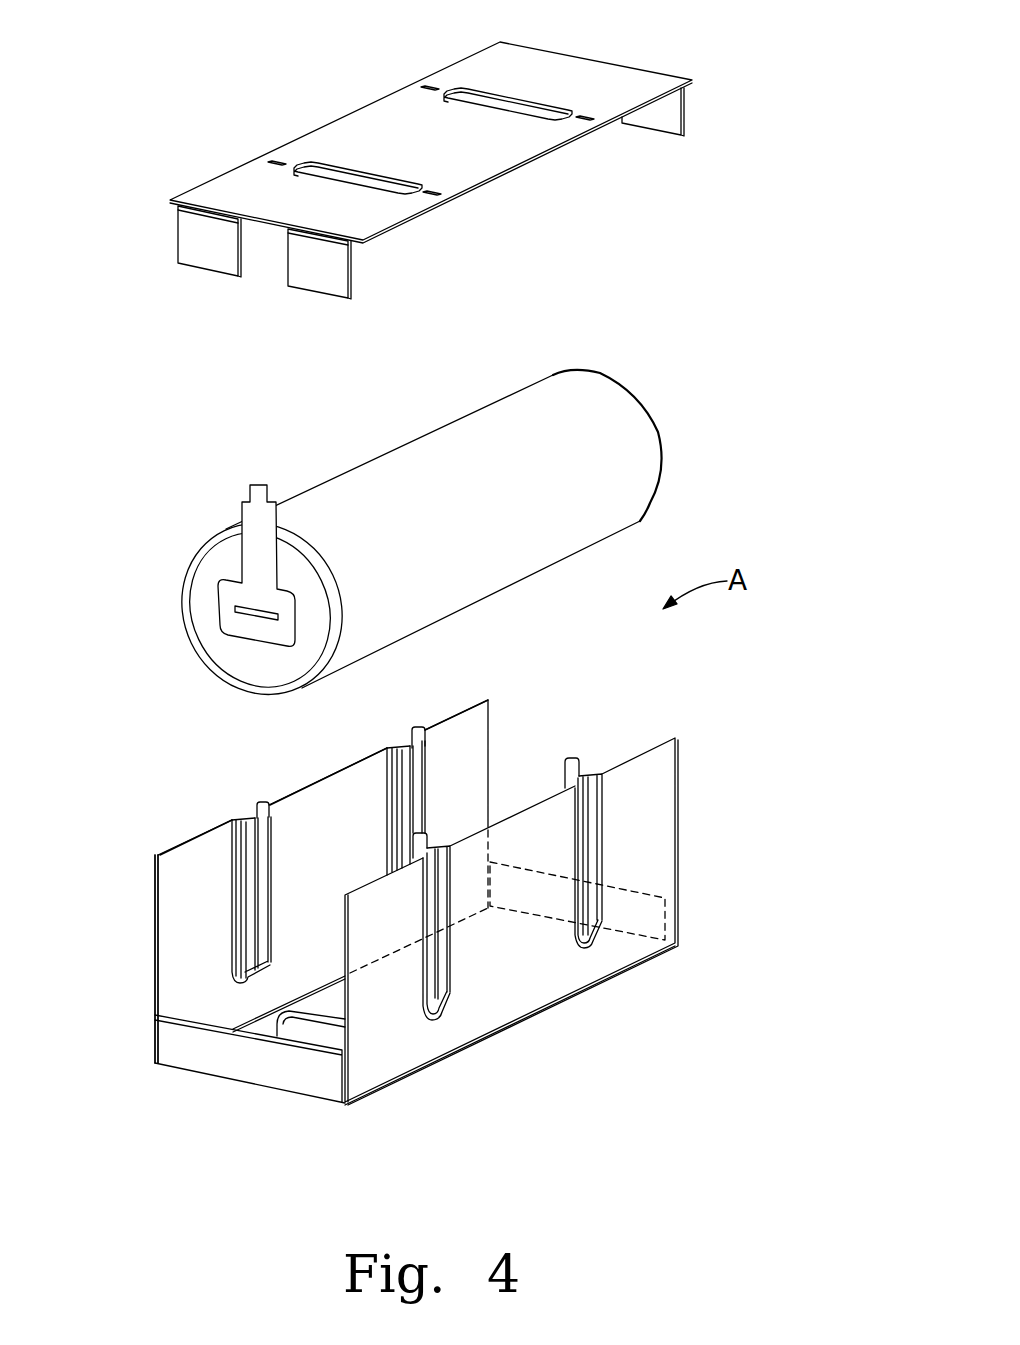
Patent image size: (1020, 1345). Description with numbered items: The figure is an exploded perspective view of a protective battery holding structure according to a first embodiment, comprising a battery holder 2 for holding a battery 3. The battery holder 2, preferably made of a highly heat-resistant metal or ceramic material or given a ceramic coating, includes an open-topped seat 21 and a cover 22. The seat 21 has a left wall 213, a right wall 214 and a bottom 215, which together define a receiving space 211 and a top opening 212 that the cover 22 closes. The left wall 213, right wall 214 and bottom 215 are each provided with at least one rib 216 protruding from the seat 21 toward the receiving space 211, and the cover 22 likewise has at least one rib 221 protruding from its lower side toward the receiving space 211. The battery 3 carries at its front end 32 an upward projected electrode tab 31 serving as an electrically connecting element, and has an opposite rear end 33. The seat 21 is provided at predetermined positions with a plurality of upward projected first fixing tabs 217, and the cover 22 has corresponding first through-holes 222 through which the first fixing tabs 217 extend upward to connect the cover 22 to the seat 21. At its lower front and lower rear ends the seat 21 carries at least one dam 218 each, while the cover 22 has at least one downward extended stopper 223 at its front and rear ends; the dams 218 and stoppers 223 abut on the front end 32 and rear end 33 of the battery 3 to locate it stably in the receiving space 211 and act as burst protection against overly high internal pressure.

The battery holder 2 is at (399, 919).
The battery 3 is at (421, 496).
The seat 21 is at (399, 919).
The cover 22 is at (403, 177).
The electrode tab 31 is at (256, 484).
The front end 32 is at (200, 594).
The rear end 33 is at (642, 400).
The receiving space 211 is at (305, 873).
The top opening 212 is at (330, 818).
The left wall 213 is at (198, 863).
The right wall 214 is at (500, 985).
The bottom 215 is at (385, 1090).
The rib 216 is at (403, 770).
The first fixing tab 217 is at (418, 730).
The dam 218 is at (630, 917).
The rib 221 is at (367, 183).
The first through-hole 222 is at (428, 84).
The stopper 223 is at (314, 263).